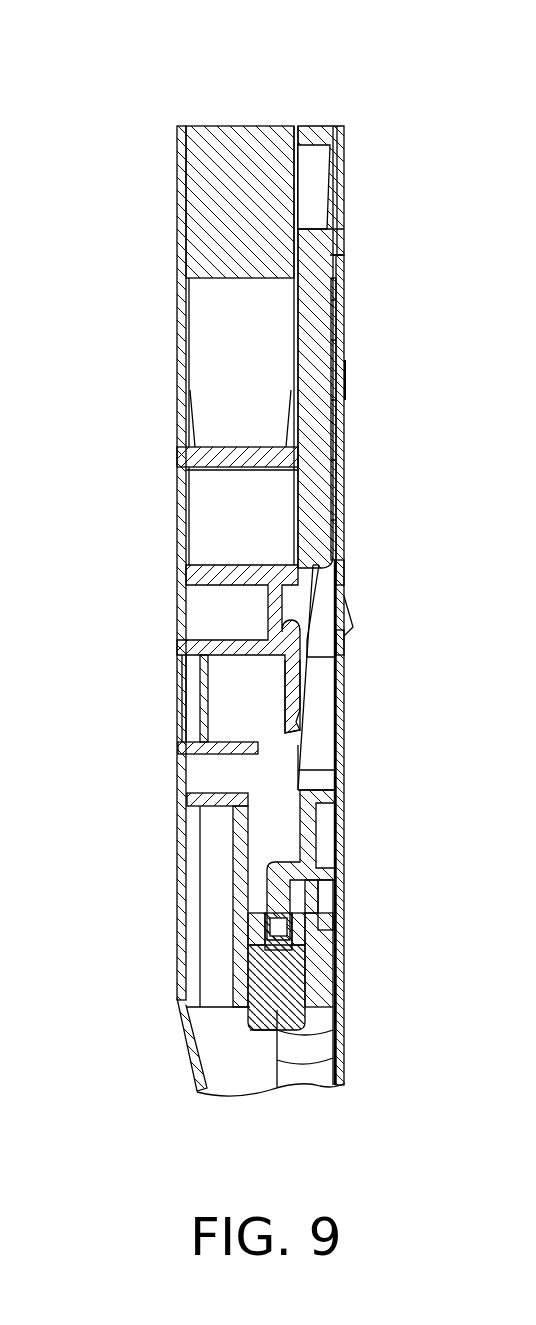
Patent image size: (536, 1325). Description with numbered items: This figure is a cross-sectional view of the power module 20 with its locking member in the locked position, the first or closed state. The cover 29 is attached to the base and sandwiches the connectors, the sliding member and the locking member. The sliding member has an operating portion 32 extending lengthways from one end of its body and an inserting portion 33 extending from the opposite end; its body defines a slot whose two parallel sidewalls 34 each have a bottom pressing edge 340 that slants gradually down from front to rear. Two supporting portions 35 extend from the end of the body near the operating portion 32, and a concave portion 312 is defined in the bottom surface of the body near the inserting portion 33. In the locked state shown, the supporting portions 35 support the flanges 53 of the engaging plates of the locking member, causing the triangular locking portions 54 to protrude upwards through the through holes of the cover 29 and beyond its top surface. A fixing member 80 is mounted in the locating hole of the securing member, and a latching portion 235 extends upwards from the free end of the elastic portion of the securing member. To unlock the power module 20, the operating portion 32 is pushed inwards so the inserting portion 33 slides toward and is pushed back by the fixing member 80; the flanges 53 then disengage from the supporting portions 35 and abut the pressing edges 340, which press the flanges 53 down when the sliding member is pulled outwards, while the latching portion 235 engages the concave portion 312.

The power module 20 is at (147, 74).
The operating portion 32 is at (316, 405).
The supporting portions 35 is at (300, 568).
The flange 53 is at (313, 600).
The locking portion 54 is at (352, 624).
The latching portion 235 is at (301, 716).
The sidewall 34 is at (322, 745).
The pressing edge 340 is at (300, 752).
The concave portion 312 is at (308, 843).
The cover 29 is at (343, 909).
The fixing member 80 is at (296, 990).
The inserting portion 33 is at (282, 929).